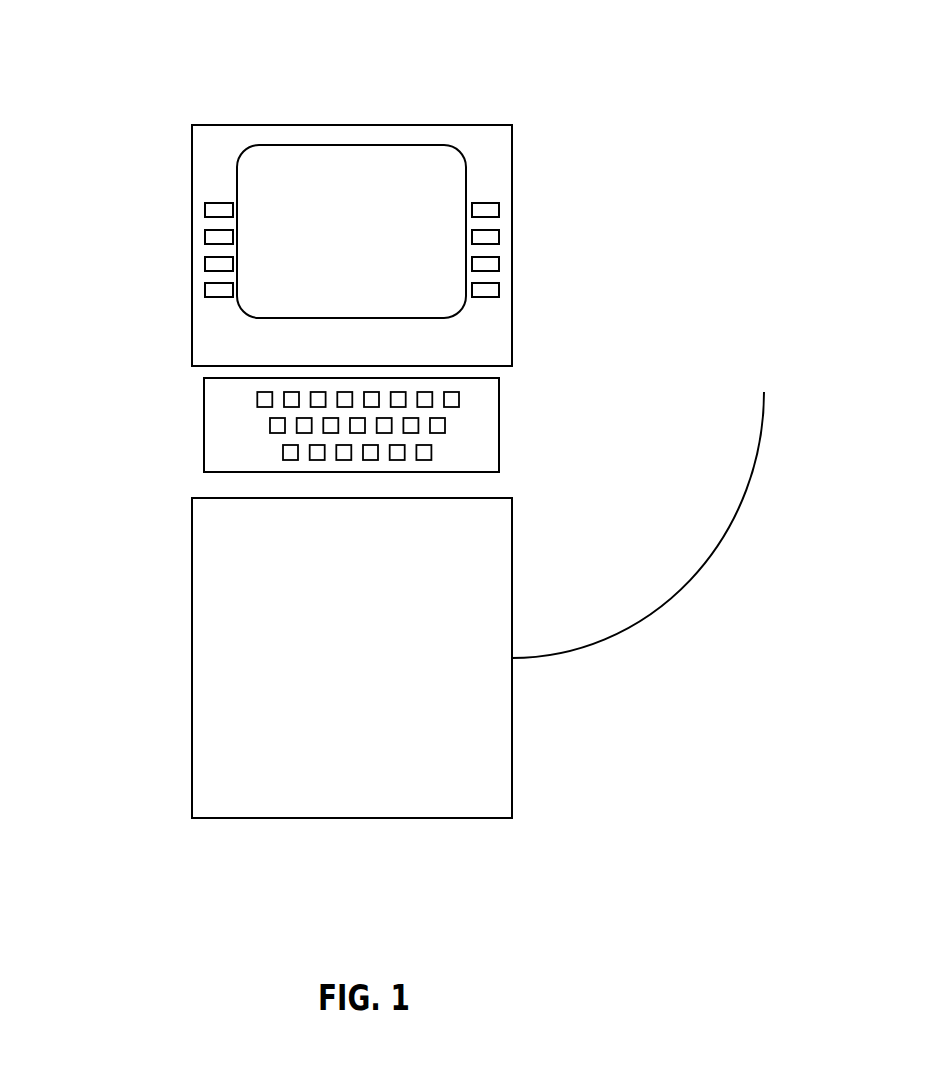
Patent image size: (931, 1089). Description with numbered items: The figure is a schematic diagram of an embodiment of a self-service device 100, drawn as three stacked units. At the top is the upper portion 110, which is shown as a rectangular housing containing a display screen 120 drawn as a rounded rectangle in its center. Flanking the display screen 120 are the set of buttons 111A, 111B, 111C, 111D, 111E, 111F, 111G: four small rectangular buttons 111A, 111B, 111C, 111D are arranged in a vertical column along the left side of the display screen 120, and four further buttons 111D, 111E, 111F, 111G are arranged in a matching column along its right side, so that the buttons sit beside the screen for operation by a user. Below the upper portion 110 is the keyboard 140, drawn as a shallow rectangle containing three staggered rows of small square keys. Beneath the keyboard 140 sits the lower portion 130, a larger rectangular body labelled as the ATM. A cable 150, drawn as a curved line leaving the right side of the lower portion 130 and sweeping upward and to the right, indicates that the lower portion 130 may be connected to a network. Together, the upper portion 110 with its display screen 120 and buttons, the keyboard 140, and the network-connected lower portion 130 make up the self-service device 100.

The self-service device 100 is at (82, 33).
The upper portion 110 is at (192, 142).
The display screen 120 is at (385, 165).
The button 111A is at (205, 210).
The button 111B is at (205, 237).
The button 111C is at (205, 263).
The button 111D is at (205, 290).
The button 111E is at (499, 237).
The button 111F is at (499, 263).
The button 111G is at (499, 290).
The lower portion 130 is at (191, 598).
The keyboard 140 is at (512, 426).
The cable 150 is at (703, 555).